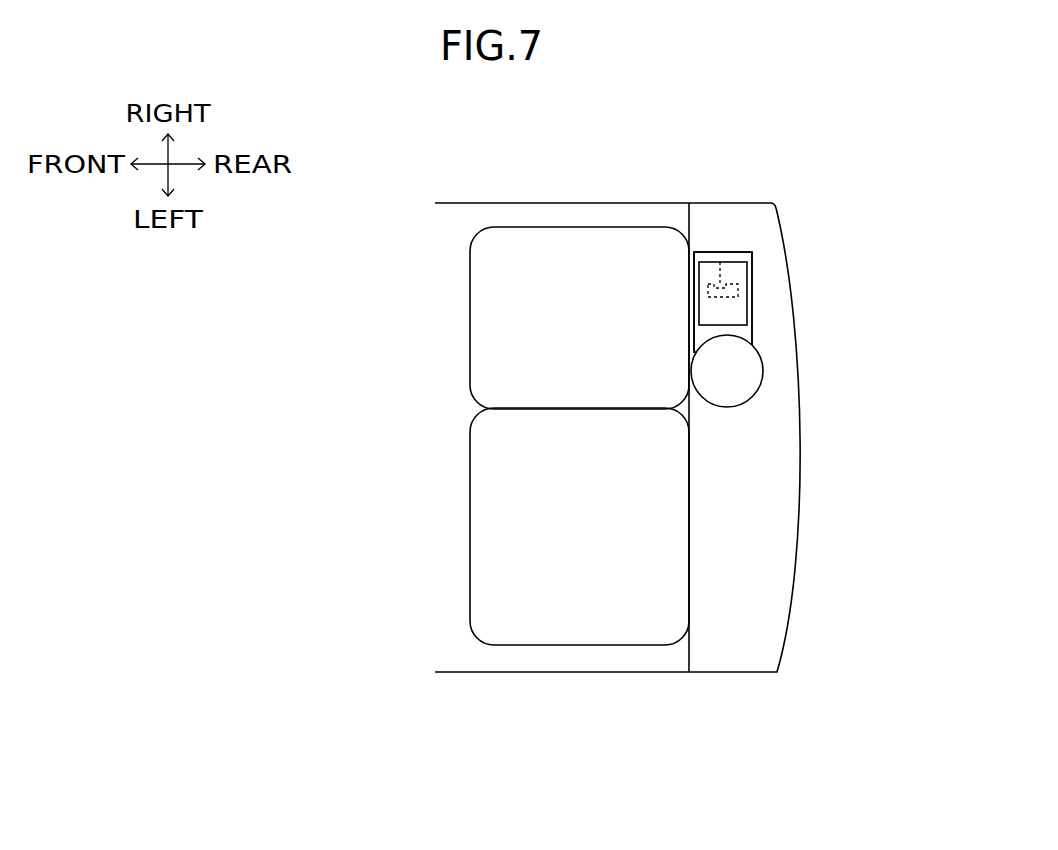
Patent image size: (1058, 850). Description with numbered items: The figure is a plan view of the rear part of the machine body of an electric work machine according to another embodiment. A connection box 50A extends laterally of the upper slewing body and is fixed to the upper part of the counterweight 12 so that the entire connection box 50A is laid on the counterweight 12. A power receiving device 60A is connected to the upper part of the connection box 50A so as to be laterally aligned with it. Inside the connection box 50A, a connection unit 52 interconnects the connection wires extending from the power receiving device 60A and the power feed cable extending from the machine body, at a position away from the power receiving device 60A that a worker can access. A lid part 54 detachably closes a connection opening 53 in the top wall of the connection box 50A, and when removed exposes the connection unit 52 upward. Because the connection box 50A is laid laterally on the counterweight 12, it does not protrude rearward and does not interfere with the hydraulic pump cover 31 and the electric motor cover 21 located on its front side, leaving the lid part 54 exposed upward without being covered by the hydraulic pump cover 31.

The counterweight 12 is at (800, 468).
The electric motor cover 21 is at (570, 622).
The hydraulic pump cover 31 is at (558, 257).
The connection box 50A is at (752, 283).
The connection unit 52 is at (720, 262).
The connection opening 53 is at (753, 257).
The lid part 54 is at (723, 302).
The power receiving device 60A is at (757, 367).